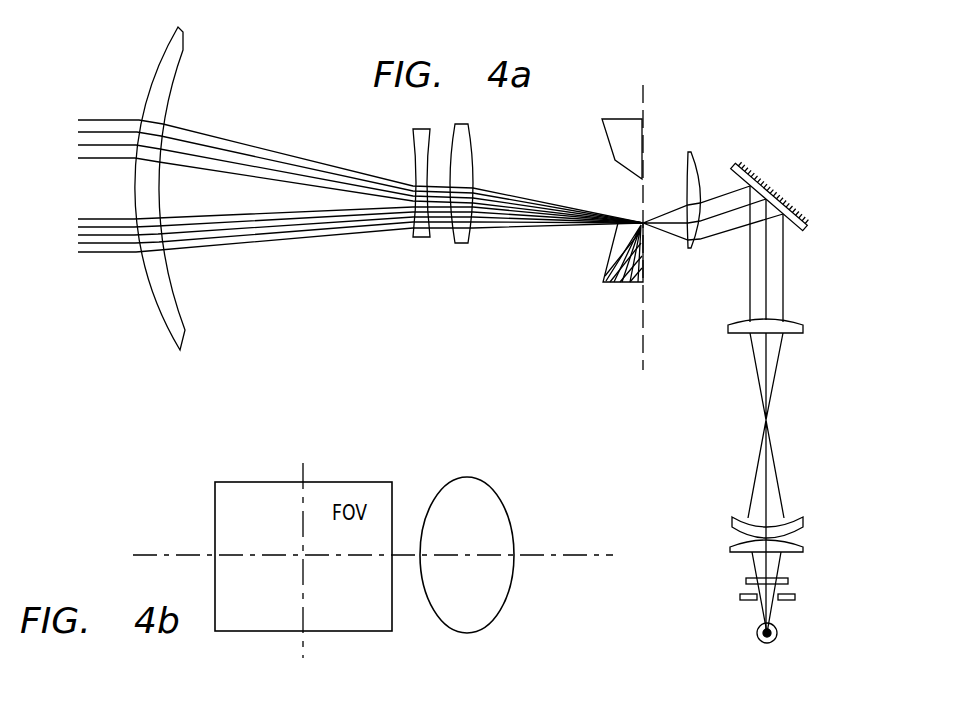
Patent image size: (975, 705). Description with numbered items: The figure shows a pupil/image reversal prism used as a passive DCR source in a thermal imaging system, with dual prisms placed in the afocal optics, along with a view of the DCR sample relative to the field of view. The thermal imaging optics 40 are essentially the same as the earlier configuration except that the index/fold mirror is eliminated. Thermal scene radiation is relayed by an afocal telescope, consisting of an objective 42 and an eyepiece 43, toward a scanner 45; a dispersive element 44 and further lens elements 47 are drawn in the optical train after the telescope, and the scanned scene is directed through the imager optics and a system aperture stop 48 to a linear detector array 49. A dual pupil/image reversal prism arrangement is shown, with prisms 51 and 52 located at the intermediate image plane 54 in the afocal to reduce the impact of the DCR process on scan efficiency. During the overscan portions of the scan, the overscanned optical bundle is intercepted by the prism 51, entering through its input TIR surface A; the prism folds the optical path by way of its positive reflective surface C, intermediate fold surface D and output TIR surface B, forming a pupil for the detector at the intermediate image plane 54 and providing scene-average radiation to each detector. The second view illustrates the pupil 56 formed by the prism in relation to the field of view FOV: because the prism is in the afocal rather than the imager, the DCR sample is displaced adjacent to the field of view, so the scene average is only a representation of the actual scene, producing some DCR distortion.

In FIG. 4a, the thermal imaging optics 40 is at (529, 274).
In FIG. 4a, the objective 42 is at (458, 361).
In FIG. 4a, the eyepiece 43 is at (693, 250).
In FIG. 4a, the diffraction grating 44 is at (777, 188).
In FIG. 4a, the scanner 45 is at (728, 329).
In FIG. 4a, the lens assembly 47 is at (733, 535).
In FIG. 4a, the system aperture stop 48 is at (739, 597).
In FIG. 4a, the linear detector array 49 is at (757, 634).
In FIG. 4a, the pupil/image reversal prism 51 is at (605, 288).
In FIG. 4a, the pupil/image reversal prism 52 is at (619, 117).
In FIG. 4a, the intermediate image plane 54 is at (641, 356).
In FIG. 4b, the pupil 56 is at (492, 486).
In FIG. 4a, the input TIR surface A is at (645, 268).
In FIG. 4a, the output TIR surface B is at (621, 220).
In FIG. 4a, the positive reflective surface C is at (627, 288).
In FIG. 4a, the intermediate fold surface D is at (606, 257).